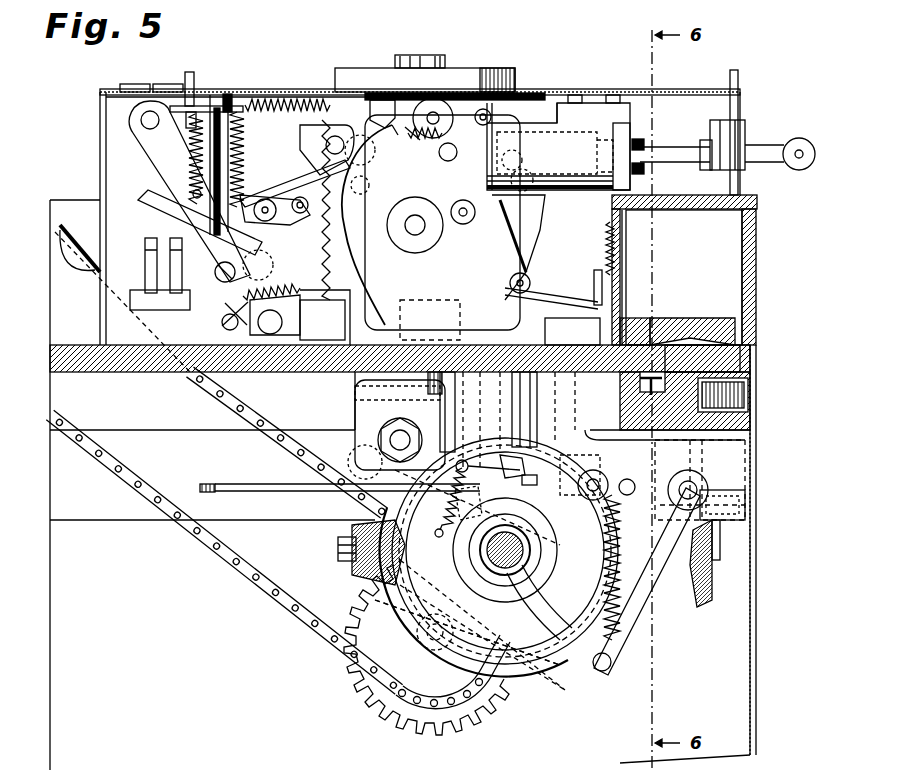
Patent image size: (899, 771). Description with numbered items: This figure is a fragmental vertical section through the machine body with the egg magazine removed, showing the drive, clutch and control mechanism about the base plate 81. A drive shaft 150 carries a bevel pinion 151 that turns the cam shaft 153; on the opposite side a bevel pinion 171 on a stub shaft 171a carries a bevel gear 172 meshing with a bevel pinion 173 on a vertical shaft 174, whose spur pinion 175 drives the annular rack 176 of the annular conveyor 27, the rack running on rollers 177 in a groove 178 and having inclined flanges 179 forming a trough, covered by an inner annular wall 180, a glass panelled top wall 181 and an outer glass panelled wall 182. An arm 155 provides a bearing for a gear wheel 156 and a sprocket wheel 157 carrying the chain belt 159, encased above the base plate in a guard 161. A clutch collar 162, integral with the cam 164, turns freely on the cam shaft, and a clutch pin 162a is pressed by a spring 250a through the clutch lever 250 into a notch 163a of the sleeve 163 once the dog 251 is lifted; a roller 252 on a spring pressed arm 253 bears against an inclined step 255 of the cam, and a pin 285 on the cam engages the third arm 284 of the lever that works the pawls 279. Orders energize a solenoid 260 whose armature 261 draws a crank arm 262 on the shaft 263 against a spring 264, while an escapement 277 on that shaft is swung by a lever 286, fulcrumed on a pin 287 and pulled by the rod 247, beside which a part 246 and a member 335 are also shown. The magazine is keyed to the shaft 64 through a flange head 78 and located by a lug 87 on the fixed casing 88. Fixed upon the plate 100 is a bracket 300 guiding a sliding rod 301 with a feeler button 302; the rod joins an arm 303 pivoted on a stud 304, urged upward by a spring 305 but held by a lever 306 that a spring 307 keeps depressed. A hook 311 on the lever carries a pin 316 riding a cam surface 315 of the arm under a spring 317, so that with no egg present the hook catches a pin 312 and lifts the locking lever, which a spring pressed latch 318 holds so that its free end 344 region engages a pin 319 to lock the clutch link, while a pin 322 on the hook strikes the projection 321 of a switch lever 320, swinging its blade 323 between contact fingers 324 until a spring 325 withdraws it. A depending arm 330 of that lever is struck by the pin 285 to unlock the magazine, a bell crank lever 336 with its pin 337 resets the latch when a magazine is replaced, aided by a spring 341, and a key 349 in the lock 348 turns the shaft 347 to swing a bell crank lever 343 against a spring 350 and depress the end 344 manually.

The bracket 300 is at (192, 106).
The pin 337 is at (190, 72).
The vertically sliding rod 301 is at (216, 95).
The feeler button 302 is at (228, 94).
The spring 307 is at (276, 100).
The bell crank lever 336 is at (135, 120).
The plate 100 is at (112, 142).
The spring 325 is at (225, 172).
The switch blade 323 is at (145, 210).
The guard 161 is at (69, 243).
The contact fingers 324 is at (168, 252).
The spring pressed latch 318 is at (238, 316).
The spring 341 is at (250, 330).
The switch lever 320 is at (228, 279).
The arm 303 is at (275, 214).
The spring 305 is at (255, 159).
The stud 304 is at (300, 150).
The lever 306 is at (322, 145).
The cam surface 315 is at (330, 186).
The pin 316 is at (328, 203).
The spring 317 is at (328, 221).
The projection 321 is at (328, 240).
The pin 322 is at (330, 257).
The pin 312 is at (322, 305).
The hook 311 is at (318, 300).
The pin 319 is at (430, 325).
The free end 344 is at (572, 331).
The escapement 277 is at (405, 130).
The spring 264 is at (412, 120).
The shaft 64 is at (420, 58).
The crank arm 262 is at (452, 108).
The shaft 263 is at (475, 105).
The flange head 78 is at (505, 82).
The fixed casing 88 is at (602, 92).
The lug 87 is at (740, 80).
The lock 348 is at (745, 132).
The key 349 is at (799, 148).
The shaft 347 is at (670, 155).
The solenoid 260 is at (516, 146).
The armature 261 is at (445, 158).
The pawls 279 is at (535, 210).
The pin 287 is at (524, 280).
The spring 350 is at (604, 262).
The lever 286 is at (551, 286).
The bell crank lever 343 is at (603, 290).
The inner annular wall 180 is at (622, 232).
The glass panelled top wall 181 is at (715, 212).
The outer glass panelled wall 182 is at (756, 247).
The groove 178 is at (645, 330).
The lateral flanges 179 is at (680, 318).
The annular conveyor 27 is at (780, 346).
The annular rack 176 is at (688, 358).
The vertical shaft 174 is at (722, 383).
The rollers 177 is at (645, 383).
The spur pinion 175 is at (752, 395).
The depending arm 330 is at (520, 380).
The dog 251 is at (542, 409).
The pin 285 is at (515, 462).
The clutch lever 250 is at (560, 462).
The inclined step 255 is at (603, 432).
The bracket 335 is at (370, 435).
The roller 252 is at (595, 470).
The spring pressed arm 253 is at (655, 475).
The stop 246 is at (205, 484).
The rod 247 is at (250, 491).
The third arm 284 is at (420, 468).
The notch 163a is at (552, 468).
The bevel pinion 173 is at (750, 502).
The spring 250a is at (435, 502).
The clutch pin 162a is at (476, 503).
The bevel pinion 151 is at (355, 542).
The drive shaft 150 is at (358, 562).
The sleeve 163 is at (542, 549).
The stub shaft 171a is at (720, 538).
The bevel gear 172 is at (714, 545).
The base plate 81 is at (118, 522).
The chain belt 159 is at (232, 572).
The clutch collar 162 is at (445, 590).
The cam shaft 153 is at (530, 580).
The bevel pinion 171 is at (645, 581).
The arm 155 is at (436, 650).
The cam 164 is at (548, 645).
The sprocket wheel 157 is at (355, 675).
The gear wheel 156 is at (372, 702).